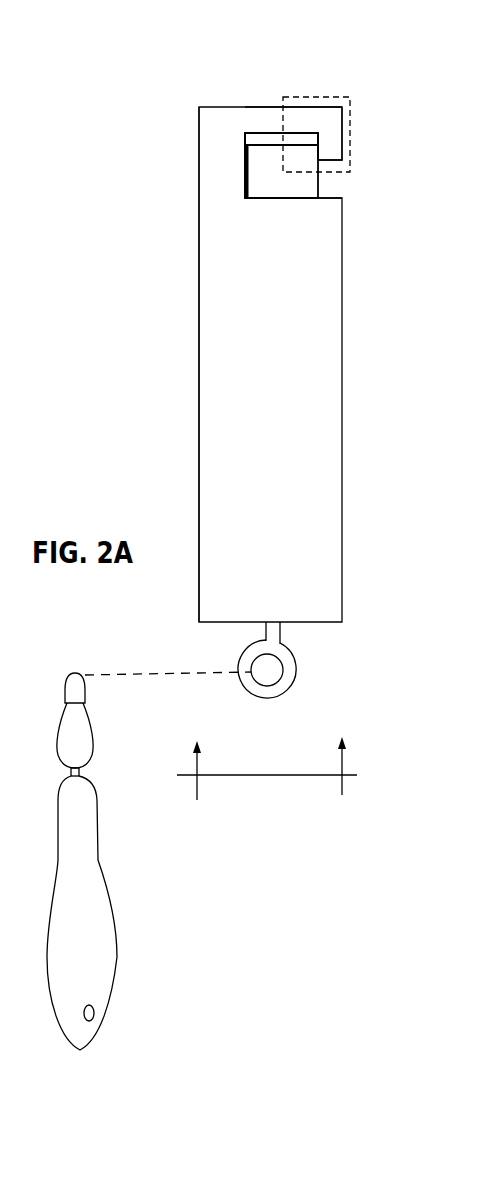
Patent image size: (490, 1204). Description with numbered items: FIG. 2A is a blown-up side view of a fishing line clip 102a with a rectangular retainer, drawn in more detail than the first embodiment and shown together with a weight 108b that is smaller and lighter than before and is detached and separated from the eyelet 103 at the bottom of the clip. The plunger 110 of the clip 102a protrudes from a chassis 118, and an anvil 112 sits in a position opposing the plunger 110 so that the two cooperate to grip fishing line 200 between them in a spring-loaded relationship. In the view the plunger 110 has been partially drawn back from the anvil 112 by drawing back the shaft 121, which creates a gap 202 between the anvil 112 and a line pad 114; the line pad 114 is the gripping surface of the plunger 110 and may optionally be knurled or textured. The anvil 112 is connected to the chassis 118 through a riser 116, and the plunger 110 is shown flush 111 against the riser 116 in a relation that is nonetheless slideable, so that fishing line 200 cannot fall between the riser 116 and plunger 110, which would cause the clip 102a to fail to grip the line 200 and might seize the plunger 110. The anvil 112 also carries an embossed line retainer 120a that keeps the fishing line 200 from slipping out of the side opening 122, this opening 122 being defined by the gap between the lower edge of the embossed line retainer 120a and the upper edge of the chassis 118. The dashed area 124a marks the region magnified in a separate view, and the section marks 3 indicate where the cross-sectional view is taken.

The clip 102a is at (152, 418).
The eyelet 103 is at (297, 672).
The weight 108b is at (82, 861).
The plunger 110 is at (290, 180).
The flush 111 is at (248, 162).
The anvil 112 is at (278, 115).
The line pad 114 is at (270, 135).
The riser 116 is at (212, 163).
The chassis 118 is at (270, 461).
The embossed line retainer 120a is at (333, 127).
The shaft 121 is at (273, 637).
The side opening 122 is at (370, 168).
The area 124a is at (308, 97).
The fishing line 200 is at (252, 137).
The gap 202 is at (273, 143).
The section line 3- 3 is at (266, 768).